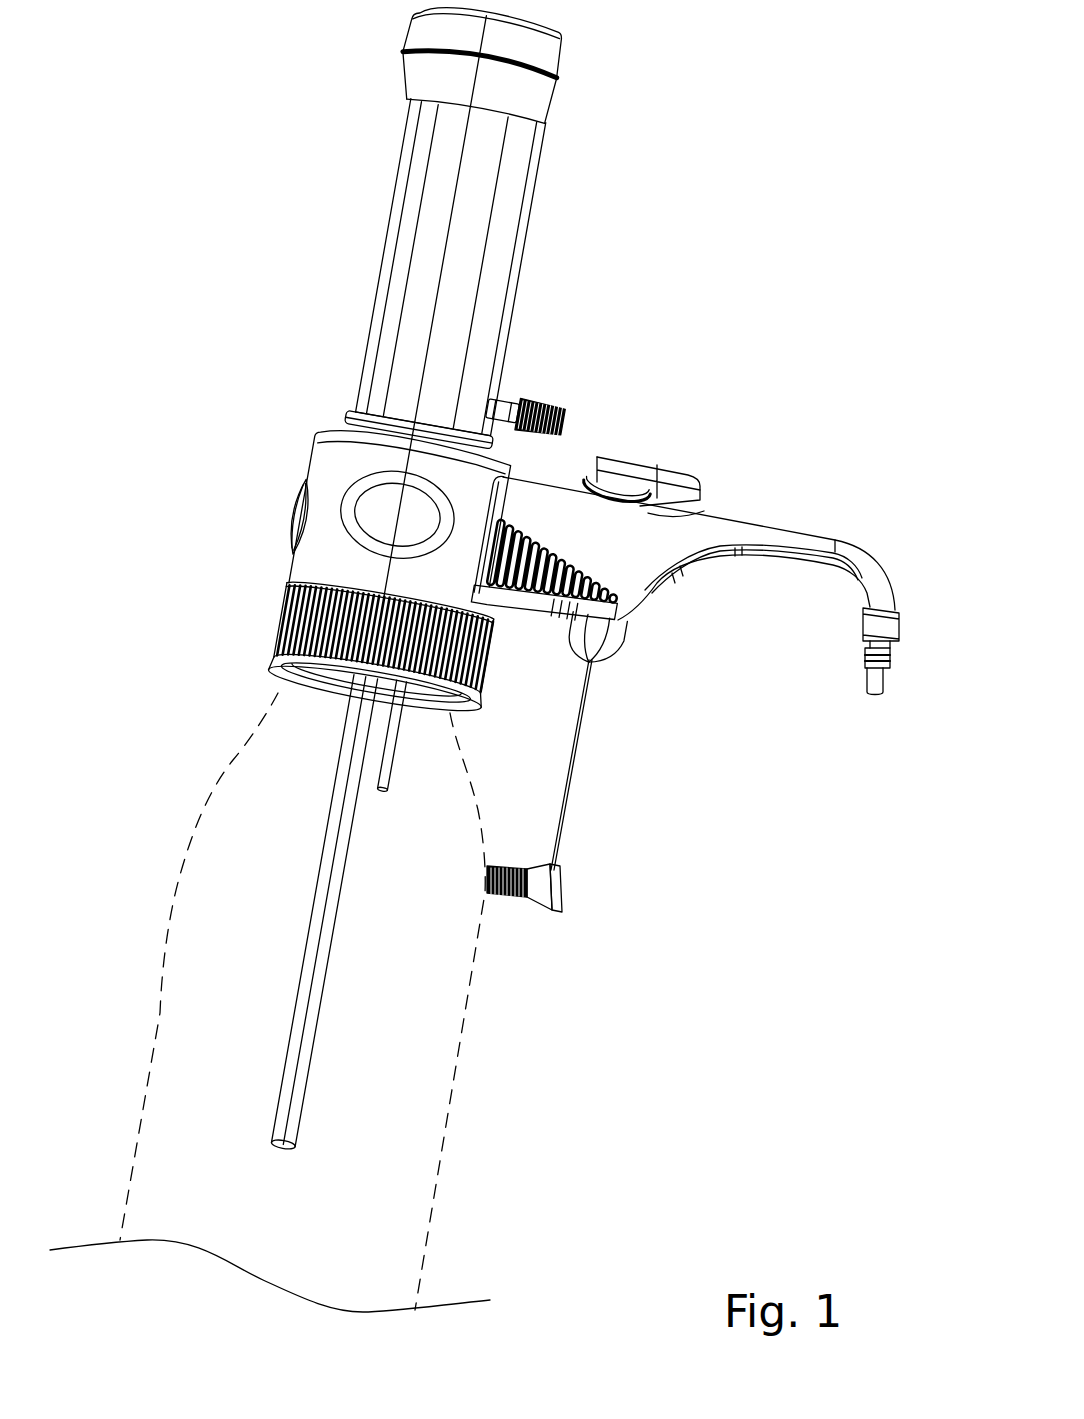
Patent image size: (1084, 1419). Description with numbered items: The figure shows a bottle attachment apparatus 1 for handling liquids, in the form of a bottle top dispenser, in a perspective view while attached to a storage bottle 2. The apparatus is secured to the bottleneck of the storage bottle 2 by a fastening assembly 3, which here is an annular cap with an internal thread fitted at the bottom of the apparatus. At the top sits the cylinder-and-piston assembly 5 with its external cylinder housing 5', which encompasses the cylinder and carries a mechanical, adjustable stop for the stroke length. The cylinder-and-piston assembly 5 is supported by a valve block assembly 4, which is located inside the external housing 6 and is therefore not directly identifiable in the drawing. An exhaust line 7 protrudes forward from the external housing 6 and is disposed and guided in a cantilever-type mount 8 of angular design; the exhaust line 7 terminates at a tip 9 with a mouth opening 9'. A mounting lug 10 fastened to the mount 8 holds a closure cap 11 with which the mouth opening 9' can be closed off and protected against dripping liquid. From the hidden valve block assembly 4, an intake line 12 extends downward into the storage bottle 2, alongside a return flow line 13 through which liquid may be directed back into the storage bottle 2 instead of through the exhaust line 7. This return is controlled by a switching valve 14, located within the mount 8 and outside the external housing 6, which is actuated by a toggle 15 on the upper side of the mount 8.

The bottle attachment apparatus 1 is at (538, 460).
The storage bottle 2 is at (183, 860).
The fastening assembly 3 is at (287, 613).
The valve block assembly 4 is at (250, 503).
The cylinder-and-piston assembly 5 is at (410, 306).
The cylinder housing 5' is at (416, 278).
The external housing 6 is at (328, 462).
The exhaust line 7 is at (812, 498).
The cantilever-type mount 8 is at (745, 530).
The tip 9 is at (910, 646).
The mouth opening 9' is at (906, 697).
The mounting lug 10 is at (583, 718).
The closure cap 11 is at (562, 888).
The intake line 12 is at (310, 994).
The return flow line 13 is at (386, 744).
The switching valve 14 is at (706, 620).
The toggle 15 is at (620, 458).